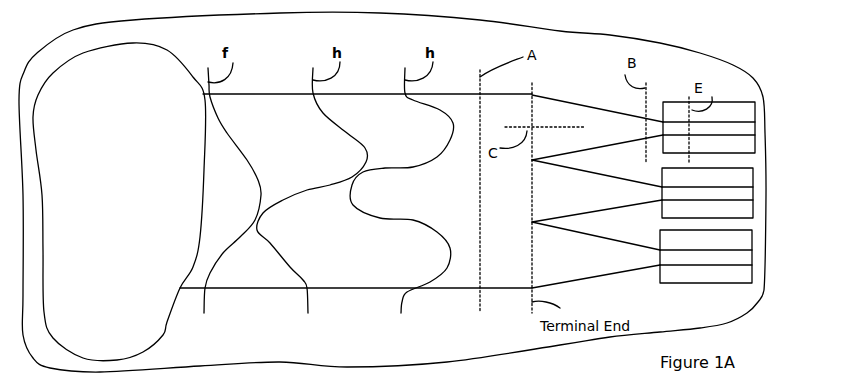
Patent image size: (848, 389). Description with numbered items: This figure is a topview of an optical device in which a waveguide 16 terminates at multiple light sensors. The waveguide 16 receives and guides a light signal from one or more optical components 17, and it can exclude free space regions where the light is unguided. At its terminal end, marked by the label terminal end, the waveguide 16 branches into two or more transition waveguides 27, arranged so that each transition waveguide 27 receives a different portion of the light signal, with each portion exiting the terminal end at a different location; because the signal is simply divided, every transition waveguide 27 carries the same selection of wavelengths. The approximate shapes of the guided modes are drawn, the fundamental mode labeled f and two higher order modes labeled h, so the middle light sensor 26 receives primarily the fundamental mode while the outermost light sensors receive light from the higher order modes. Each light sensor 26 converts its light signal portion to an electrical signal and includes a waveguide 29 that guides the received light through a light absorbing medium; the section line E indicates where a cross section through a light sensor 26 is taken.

The waveguide 16 is at (348, 296).
The optical components 17 is at (163, 338).
The light sensor 26 is at (720, 93).
The transition waveguides 27 is at (575, 92).
The waveguides 29 is at (733, 137).